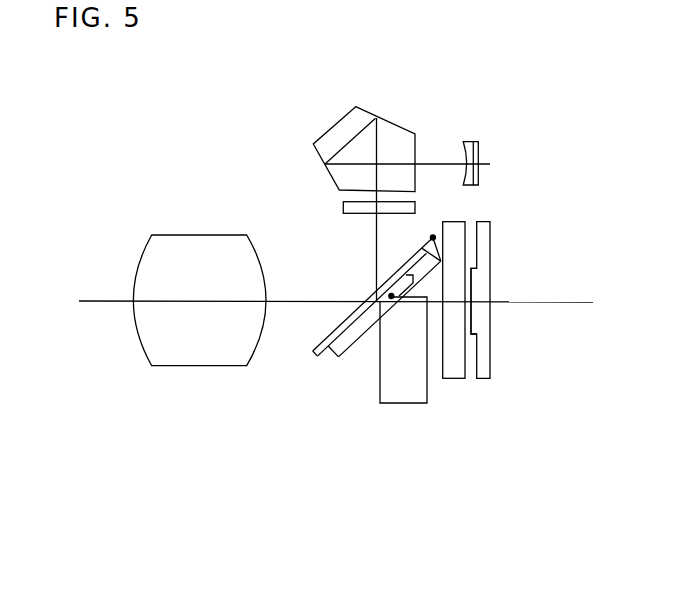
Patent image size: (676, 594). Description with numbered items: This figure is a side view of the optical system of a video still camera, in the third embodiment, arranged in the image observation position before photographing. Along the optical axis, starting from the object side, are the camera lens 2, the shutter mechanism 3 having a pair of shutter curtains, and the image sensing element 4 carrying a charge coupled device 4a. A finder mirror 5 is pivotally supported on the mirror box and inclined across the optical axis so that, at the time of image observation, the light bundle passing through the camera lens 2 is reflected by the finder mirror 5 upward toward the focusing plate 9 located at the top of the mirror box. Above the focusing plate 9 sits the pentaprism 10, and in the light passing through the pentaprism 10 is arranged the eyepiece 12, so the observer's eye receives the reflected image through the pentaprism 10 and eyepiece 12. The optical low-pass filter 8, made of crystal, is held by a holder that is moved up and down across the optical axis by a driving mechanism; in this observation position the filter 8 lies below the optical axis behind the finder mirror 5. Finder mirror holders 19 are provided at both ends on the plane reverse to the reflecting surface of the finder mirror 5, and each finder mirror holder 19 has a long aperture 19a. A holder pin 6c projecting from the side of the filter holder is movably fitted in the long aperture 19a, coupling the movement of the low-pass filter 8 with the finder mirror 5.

The camera lens 2 is at (172, 357).
The shutter mechanism 3 is at (453, 373).
The image sensing element 4 is at (483, 237).
The charge coupled device (CCD) 4a is at (475, 283).
The finder mirror 5 is at (323, 337).
The holder pin 6c is at (390, 296).
The optical low-pass filter 8 is at (383, 393).
The focusing plate 9 is at (415, 205).
The pentaprism 10 is at (343, 121).
The eyepiece 12 is at (475, 148).
The finder mirror holder 19 is at (338, 350).
The long aperture 19a is at (397, 275).